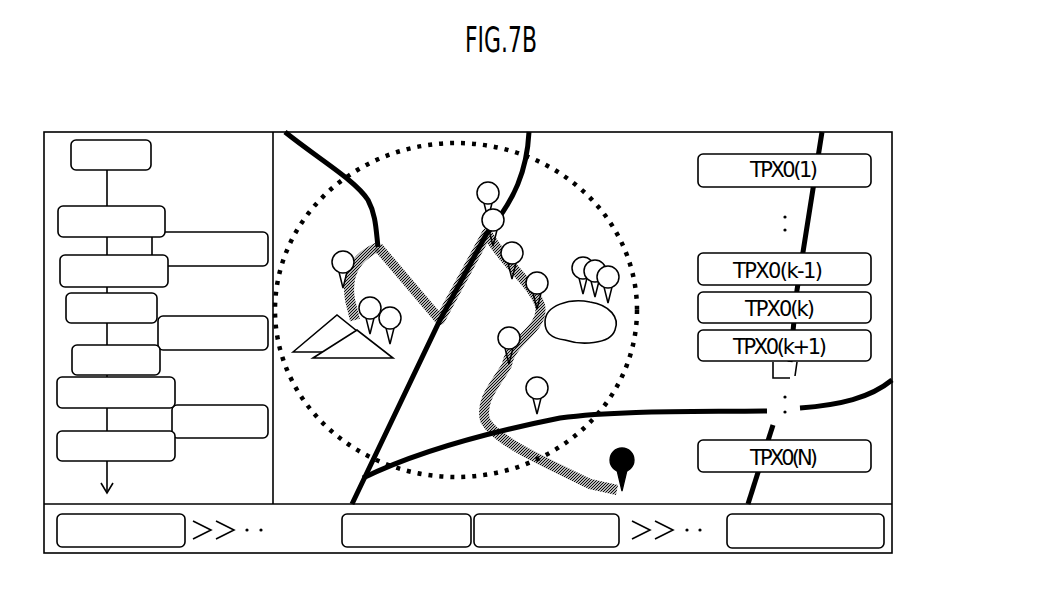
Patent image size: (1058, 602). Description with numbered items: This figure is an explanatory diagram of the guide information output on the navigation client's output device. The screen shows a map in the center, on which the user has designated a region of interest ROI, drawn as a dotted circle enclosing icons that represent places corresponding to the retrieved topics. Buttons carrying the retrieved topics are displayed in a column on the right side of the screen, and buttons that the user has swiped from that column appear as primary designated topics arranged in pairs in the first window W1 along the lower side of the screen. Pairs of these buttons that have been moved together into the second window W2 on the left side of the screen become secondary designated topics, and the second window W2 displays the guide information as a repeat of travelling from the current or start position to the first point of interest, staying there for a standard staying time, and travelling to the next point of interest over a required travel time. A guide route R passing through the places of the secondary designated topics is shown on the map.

The second window W2 is at (145, 131).
The first window W1 is at (893, 524).
The region of interest ROI is at (584, 165).
The travel route R is at (545, 443).